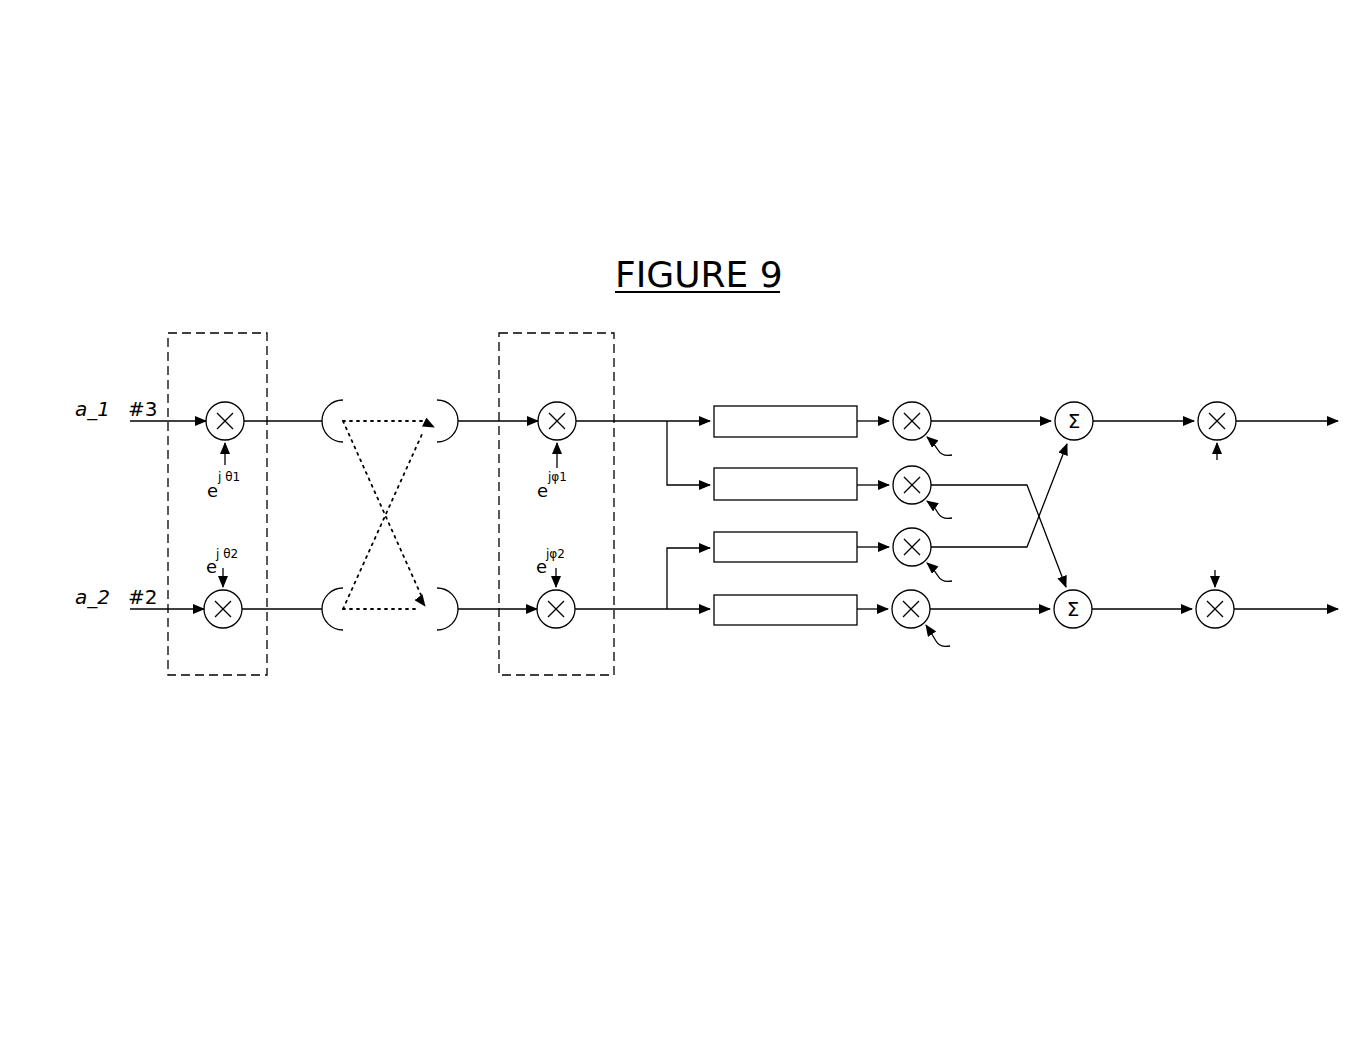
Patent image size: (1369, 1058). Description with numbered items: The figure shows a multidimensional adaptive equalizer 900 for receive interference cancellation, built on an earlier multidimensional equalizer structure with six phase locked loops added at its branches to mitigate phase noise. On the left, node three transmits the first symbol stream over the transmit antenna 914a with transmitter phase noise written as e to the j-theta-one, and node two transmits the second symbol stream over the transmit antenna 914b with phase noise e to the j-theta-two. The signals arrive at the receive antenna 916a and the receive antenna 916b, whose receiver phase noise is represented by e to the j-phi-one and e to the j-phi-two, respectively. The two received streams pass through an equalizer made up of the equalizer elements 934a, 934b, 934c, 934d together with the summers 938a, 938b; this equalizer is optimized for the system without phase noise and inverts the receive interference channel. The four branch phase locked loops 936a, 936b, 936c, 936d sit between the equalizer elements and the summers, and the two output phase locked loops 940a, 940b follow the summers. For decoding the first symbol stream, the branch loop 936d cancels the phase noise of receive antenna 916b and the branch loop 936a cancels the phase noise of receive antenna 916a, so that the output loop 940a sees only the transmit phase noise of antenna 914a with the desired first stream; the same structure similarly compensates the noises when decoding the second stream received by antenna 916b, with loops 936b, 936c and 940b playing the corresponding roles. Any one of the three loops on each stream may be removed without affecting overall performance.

The multidimensional adaptive equalizer 900 is at (757, 342).
The transmit antenna 914a is at (334, 398).
The transmit antenna 914b is at (334, 587).
The receive antenna 916a is at (447, 398).
The receive antenna 916b is at (445, 587).
The equalizer element 934a is at (808, 405).
The equalizer element 934b is at (808, 467).
The equalizer element 934c is at (808, 531).
The equalizer element 934d is at (808, 594).
The phase locked loop PLL-11 936a is at (899, 404).
The phase locked loop PLL-21 936b is at (899, 468).
The phase locked loop PLL-12 936c is at (899, 531).
The phase locked loop PLL-22 936d is at (899, 595).
The equalizer summer 938a is at (1071, 402).
The equalizer summer 938b is at (1085, 628).
The phase locked loop PLL-1 940a is at (1212, 401).
The phase locked loop PLL-2 940b is at (1206, 628).